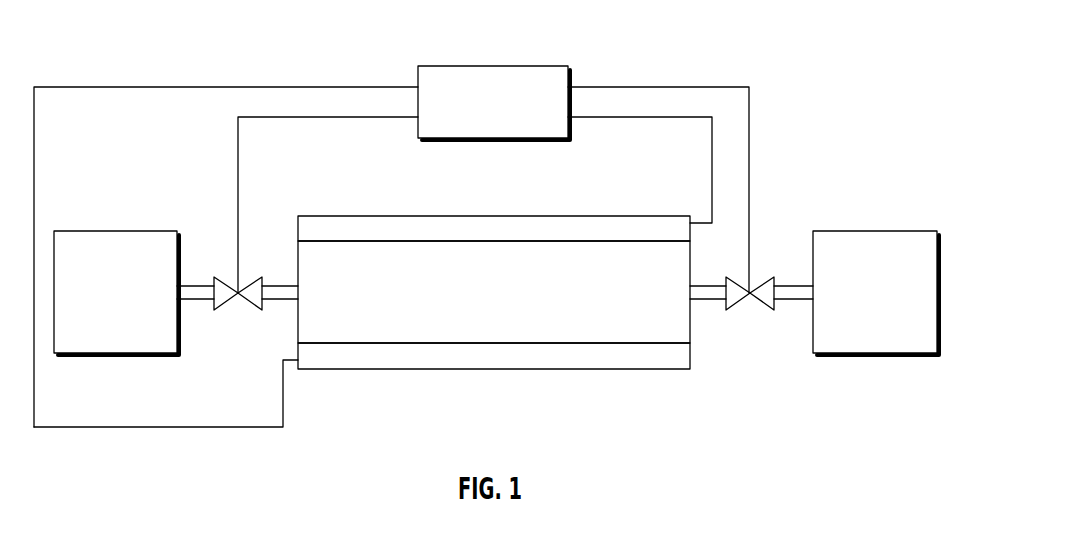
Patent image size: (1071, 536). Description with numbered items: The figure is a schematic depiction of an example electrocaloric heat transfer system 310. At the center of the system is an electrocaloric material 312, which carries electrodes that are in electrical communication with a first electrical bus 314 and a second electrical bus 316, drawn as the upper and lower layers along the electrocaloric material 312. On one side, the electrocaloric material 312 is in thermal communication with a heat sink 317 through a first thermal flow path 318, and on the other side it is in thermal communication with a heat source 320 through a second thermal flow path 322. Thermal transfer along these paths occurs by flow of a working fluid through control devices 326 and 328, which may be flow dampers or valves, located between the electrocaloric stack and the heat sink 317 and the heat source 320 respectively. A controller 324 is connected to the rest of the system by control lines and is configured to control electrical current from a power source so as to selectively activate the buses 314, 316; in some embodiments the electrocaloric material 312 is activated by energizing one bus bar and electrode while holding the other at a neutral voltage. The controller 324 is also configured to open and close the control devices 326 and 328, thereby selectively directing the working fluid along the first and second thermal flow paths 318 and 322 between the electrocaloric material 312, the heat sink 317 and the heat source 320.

The heat transfer system 310 is at (663, 54).
The electrocaloric material 312 is at (515, 320).
The first electrical bus 314 is at (399, 232).
The second electrical bus 316 is at (614, 358).
The heat sink 317 is at (888, 307).
The first thermal flow path 318 is at (782, 280).
The heat source 320 is at (128, 307).
The second thermal flow path 322 is at (205, 283).
The controller 324 is at (507, 117).
The control device 326 is at (733, 296).
The control device 328 is at (252, 298).